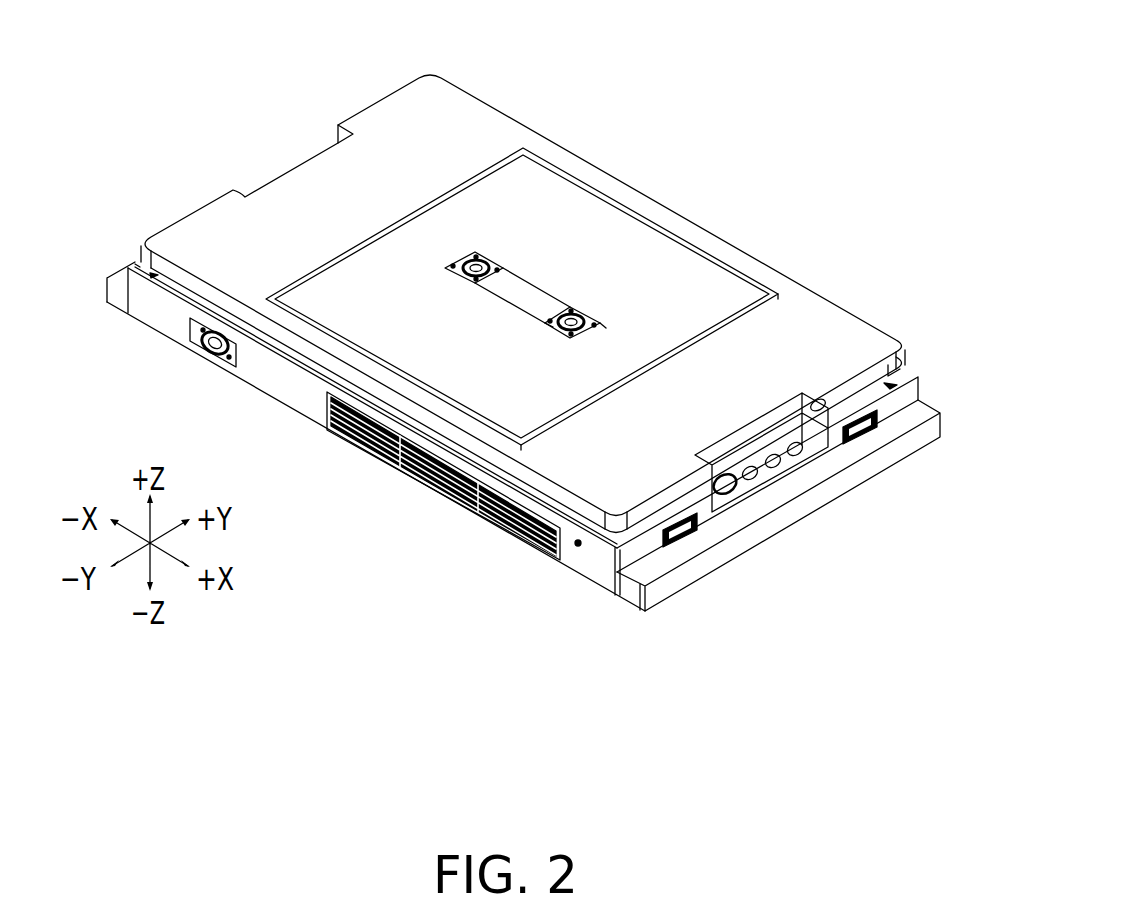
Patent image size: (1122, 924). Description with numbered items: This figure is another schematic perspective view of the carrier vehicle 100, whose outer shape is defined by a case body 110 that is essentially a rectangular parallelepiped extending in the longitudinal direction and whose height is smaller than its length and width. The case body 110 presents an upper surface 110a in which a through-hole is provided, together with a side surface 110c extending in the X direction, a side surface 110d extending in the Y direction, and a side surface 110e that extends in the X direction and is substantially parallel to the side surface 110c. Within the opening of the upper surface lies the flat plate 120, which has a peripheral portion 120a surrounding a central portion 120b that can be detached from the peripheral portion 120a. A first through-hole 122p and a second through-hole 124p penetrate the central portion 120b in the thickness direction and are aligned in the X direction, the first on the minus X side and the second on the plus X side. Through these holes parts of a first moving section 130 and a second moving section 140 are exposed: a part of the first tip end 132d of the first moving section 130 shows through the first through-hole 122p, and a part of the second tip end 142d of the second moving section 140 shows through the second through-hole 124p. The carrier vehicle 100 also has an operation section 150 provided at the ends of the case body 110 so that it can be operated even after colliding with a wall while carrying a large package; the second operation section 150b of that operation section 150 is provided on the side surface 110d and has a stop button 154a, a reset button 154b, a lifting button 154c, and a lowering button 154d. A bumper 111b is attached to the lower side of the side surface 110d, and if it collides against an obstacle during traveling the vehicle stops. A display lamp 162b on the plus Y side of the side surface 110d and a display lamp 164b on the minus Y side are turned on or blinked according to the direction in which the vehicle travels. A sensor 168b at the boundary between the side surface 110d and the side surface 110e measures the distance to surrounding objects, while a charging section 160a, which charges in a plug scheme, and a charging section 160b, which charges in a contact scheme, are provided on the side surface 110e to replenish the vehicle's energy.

The carrier vehicle 100 is at (704, 132).
The case body 110 is at (477, 80).
The upper surface 110a is at (515, 137).
The side surface 110c is at (297, 395).
The side surface 110d is at (633, 558).
The side surface 110e is at (151, 310).
The bumper 111b is at (658, 598).
The flat plate 120 is at (575, 212).
The peripheral portion 120a is at (700, 290).
The central portion 120b is at (608, 333).
The first through-hole 122p is at (466, 256).
The second through-hole 124p is at (570, 305).
The first moving section 130 is at (494, 255).
The first tip end 132d is at (466, 279).
The second moving section 140 is at (592, 308).
The second tip end 142d is at (553, 326).
The operation section 150 is at (885, 617).
The second operation section 150b is at (951, 505).
The stop button 154a is at (728, 493).
The reset button 154b is at (753, 481).
The lifting button 154c is at (776, 469).
The lowering button 154d is at (798, 457).
The charging section 160a is at (208, 358).
The charging section 160b is at (487, 511).
The display lamp 162b is at (863, 429).
The display lamp 164b is at (687, 528).
The sensor 168b is at (912, 361).